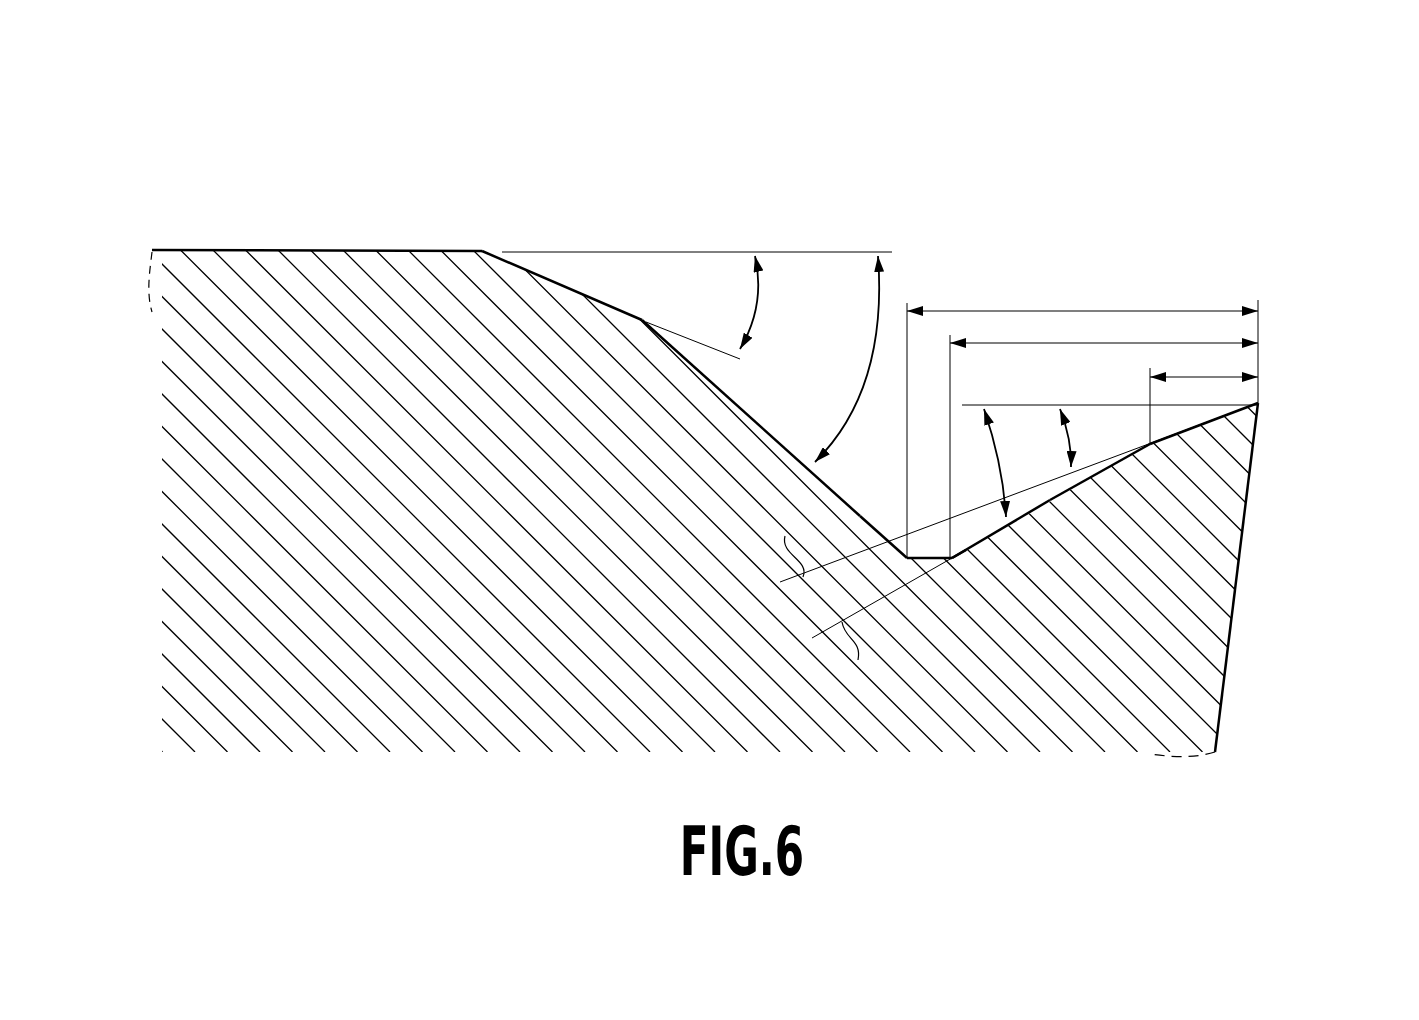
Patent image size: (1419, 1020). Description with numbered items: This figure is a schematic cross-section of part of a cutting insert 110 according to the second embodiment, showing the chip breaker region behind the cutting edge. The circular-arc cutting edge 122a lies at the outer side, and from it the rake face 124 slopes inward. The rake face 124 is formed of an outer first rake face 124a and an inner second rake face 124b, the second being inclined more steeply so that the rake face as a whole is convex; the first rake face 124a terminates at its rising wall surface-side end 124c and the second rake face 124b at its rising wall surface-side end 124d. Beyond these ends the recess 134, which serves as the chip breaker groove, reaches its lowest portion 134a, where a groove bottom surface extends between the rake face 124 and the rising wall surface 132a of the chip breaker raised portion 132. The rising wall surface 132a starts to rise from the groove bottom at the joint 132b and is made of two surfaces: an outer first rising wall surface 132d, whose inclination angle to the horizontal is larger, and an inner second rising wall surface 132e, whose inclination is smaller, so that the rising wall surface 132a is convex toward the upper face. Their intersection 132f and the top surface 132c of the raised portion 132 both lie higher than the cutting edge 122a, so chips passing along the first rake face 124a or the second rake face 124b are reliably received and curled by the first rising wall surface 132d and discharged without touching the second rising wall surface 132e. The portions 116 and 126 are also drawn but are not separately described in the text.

The cutting insert 110 is at (1203, 114).
The side portion 116 is at (1210, 670).
The circular-arc cutting edge 122a is at (1260, 405).
The rake face 124 is at (1105, 496).
The first rake face 124a is at (1203, 426).
The second rake face 124b is at (1058, 496).
The rising wall surface-side end of the first rake face 124c is at (1143, 447).
The rising wall surface-side end of the second rake face 124d is at (953, 561).
The end surface 126 is at (1257, 480).
The chip breaker raised portion 132 is at (645, 395).
The rising wall surface 132a is at (700, 303).
The joint 132b is at (905, 560).
The top surface 132c is at (222, 250).
The first rising wall surface 132d is at (758, 425).
The second rising wall surface 132e is at (567, 283).
The intersection 132f is at (650, 322).
The recess 134 is at (820, 384).
The lowest portion of the recess 134a is at (925, 560).